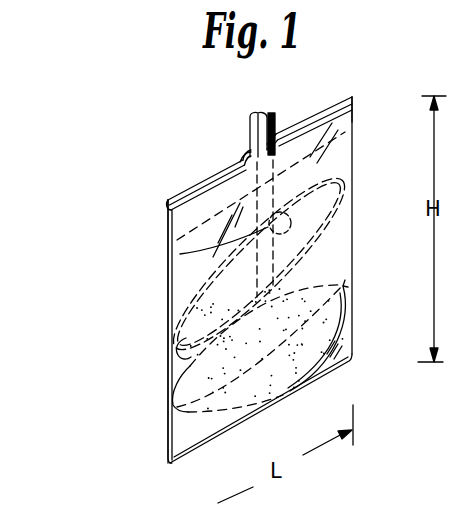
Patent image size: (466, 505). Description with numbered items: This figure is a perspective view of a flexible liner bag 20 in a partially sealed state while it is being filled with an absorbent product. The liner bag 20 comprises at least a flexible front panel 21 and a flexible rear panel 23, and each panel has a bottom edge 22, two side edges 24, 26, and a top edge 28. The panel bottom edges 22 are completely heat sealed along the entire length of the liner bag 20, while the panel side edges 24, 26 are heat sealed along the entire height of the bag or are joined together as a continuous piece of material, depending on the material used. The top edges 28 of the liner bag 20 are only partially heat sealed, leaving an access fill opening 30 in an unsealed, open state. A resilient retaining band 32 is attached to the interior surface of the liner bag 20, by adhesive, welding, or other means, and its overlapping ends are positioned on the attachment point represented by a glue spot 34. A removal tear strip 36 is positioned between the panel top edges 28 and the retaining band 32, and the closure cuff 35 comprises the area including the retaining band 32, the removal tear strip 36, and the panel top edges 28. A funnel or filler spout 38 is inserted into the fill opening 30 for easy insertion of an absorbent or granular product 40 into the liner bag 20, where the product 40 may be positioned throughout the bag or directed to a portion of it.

The flexible liner bag 20 is at (355, 180).
The flexible front panel 21 is at (170, 295).
The bottom edge 22 is at (293, 397).
The flexible rear panel 23 is at (166, 210).
The side edge 24 is at (168, 342).
The side edge 26 is at (354, 262).
The top edge 28 is at (215, 188).
The access fill opening 30 is at (242, 150).
The resilient retaining band 32 is at (333, 217).
The glue spot 34 is at (180, 254).
The closure cuff 35 is at (88, 270).
The removal tear strip 36 is at (356, 122).
The funnel or filler spout 38 is at (275, 126).
The absorbent or granular product 40 is at (340, 331).